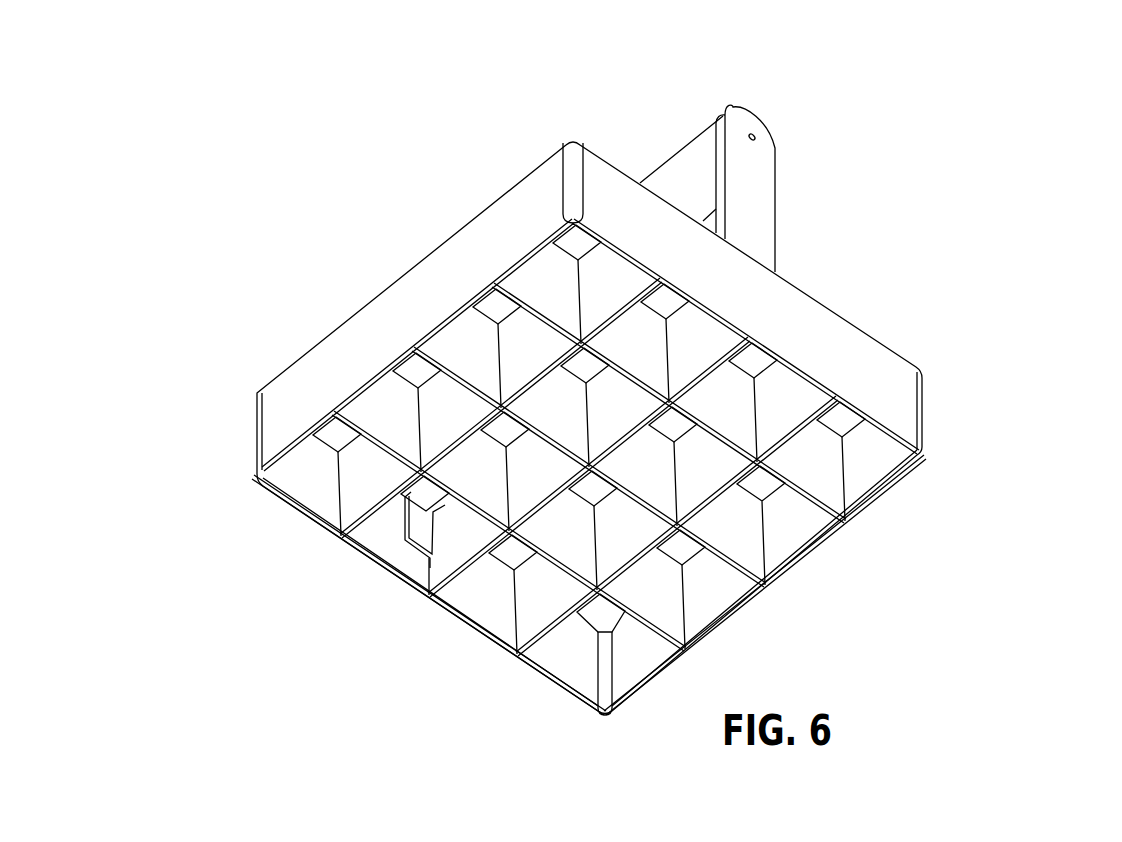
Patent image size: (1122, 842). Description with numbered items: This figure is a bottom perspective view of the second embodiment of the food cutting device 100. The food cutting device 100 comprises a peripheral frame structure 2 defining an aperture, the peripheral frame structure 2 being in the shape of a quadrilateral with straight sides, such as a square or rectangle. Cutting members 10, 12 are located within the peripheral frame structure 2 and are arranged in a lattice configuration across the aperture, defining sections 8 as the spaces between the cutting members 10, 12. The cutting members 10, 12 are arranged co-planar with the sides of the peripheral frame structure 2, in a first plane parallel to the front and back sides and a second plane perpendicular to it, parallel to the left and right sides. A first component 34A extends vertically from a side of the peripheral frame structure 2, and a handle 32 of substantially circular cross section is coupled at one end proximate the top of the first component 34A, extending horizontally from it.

The food cutting device 100 is at (1088, 67).
The peripheral frame structure 2 is at (398, 273).
The sections 8 is at (763, 480).
The cutting member 10 is at (372, 447).
The cutting member 12 is at (800, 432).
The handle 32 is at (673, 145).
The first component 34A is at (763, 203).